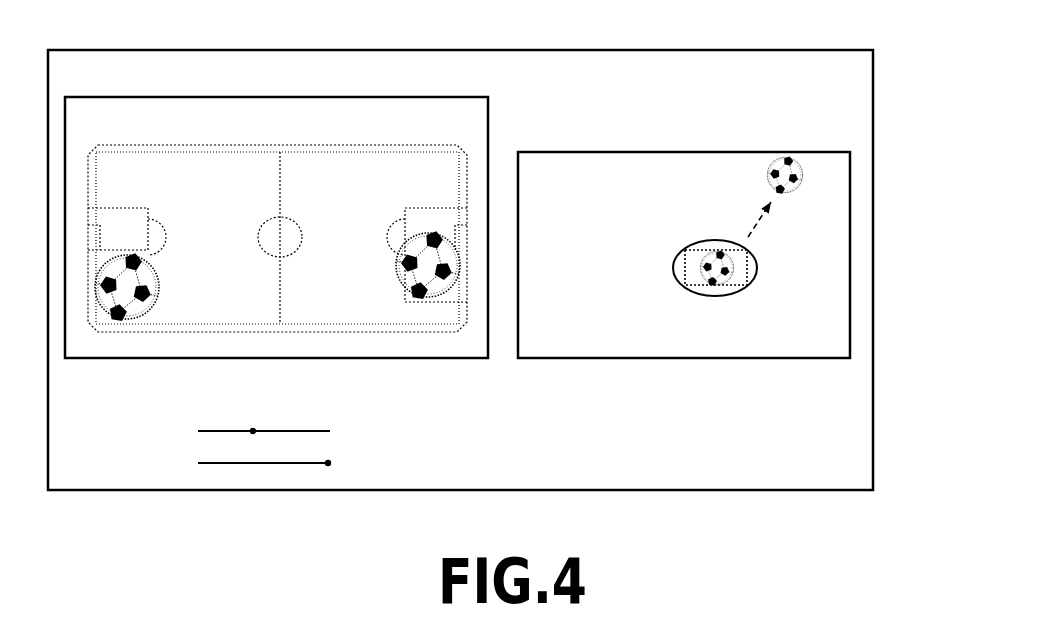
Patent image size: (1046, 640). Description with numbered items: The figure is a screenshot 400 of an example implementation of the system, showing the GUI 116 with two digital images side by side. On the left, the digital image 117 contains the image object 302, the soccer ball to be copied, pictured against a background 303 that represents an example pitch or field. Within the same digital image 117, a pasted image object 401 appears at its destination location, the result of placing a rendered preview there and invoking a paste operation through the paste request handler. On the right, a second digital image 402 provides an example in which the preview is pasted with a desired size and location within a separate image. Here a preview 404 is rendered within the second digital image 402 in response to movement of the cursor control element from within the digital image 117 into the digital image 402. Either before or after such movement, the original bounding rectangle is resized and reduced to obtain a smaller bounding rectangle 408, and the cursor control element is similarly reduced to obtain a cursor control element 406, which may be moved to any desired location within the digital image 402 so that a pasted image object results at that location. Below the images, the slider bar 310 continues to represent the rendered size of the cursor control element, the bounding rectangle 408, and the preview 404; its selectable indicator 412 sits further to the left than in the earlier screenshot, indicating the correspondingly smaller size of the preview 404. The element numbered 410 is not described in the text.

The screenshot 400 is at (802, 25).
The GUI 116 is at (150, 86).
The digital image 117 is at (267, 133).
The background 303 is at (374, 146).
The image object 302 is at (100, 320).
The pasted image object 401 is at (434, 238).
The second digital image 402 is at (720, 186).
The cursor control element 406 is at (666, 259).
The bounding rectangle 408 is at (692, 292).
The preview 404 is at (739, 281).
The repositioned object 410 is at (760, 162).
The slider bar 310 is at (120, 427).
The selectable indicator 412 is at (244, 428).